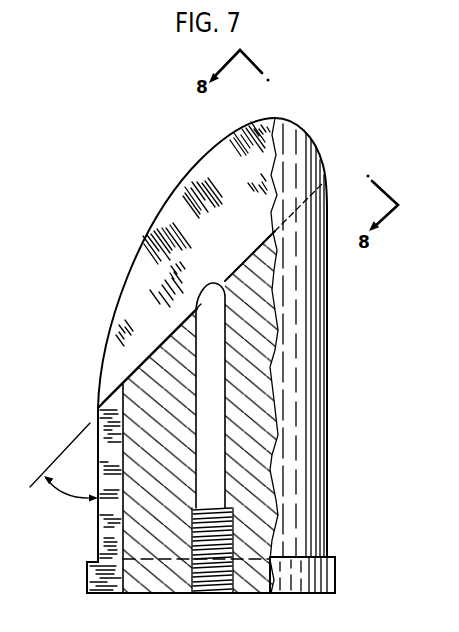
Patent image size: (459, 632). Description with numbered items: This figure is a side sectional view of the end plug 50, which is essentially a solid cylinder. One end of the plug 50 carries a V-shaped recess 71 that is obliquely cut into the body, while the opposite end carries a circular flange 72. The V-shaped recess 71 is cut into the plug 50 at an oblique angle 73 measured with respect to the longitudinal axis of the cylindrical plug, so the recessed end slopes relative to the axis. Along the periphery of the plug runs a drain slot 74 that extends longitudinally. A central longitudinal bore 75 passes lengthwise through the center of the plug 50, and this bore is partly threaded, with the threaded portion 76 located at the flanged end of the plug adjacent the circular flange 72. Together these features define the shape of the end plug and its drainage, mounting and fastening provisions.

The end plug 50 is at (334, 425).
The V-shaped recess 71 is at (178, 226).
The circular flange 72 is at (322, 578).
The oblique angle 73 is at (64, 494).
The drain slot 74 is at (112, 535).
The central longitudinal bore 75 is at (223, 370).
The threaded portion 76 is at (195, 574).